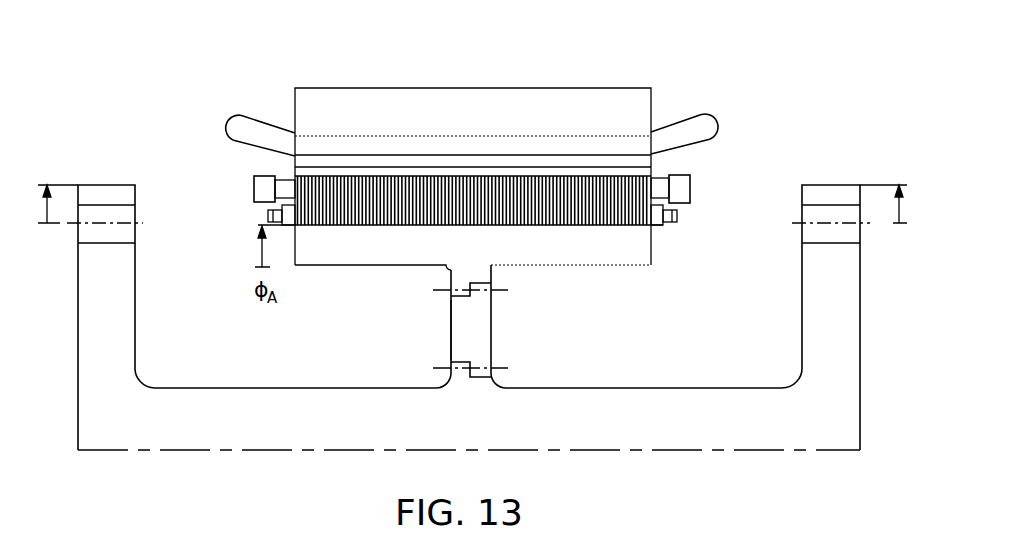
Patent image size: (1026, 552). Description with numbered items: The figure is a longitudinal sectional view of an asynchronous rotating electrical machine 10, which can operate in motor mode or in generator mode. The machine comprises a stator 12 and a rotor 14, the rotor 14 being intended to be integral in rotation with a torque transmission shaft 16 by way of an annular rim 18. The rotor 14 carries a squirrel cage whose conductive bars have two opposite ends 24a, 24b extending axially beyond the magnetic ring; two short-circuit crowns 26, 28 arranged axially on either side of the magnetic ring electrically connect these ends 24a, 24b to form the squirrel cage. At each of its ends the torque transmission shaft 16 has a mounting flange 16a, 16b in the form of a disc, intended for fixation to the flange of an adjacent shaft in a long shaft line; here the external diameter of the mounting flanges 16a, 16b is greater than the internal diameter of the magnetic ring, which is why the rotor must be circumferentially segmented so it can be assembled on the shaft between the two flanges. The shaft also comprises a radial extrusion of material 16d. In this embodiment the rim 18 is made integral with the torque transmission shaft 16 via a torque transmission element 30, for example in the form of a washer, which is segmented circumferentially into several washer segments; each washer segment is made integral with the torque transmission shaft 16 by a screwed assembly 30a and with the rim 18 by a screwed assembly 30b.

The asynchronous rotating electrical machine 10 is at (640, 70).
The stator 12 is at (636, 104).
The rotor 14 is at (730, 168).
The torque transmission shaft 16 is at (578, 445).
The mounting flange 16a is at (100, 343).
The mounting flange 16b is at (847, 296).
The radial extrusion of material 16d is at (450, 368).
The rim 18 is at (628, 250).
The end of conductive element 24a is at (283, 185).
The end of conductive element 24b is at (687, 207).
The short-circuit crown 26 is at (254, 178).
The short-circuit crown 28 is at (679, 184).
The torque transmission element 30 is at (488, 337).
The screwed assembly 30a is at (490, 364).
The screwed assembly 30b is at (487, 298).